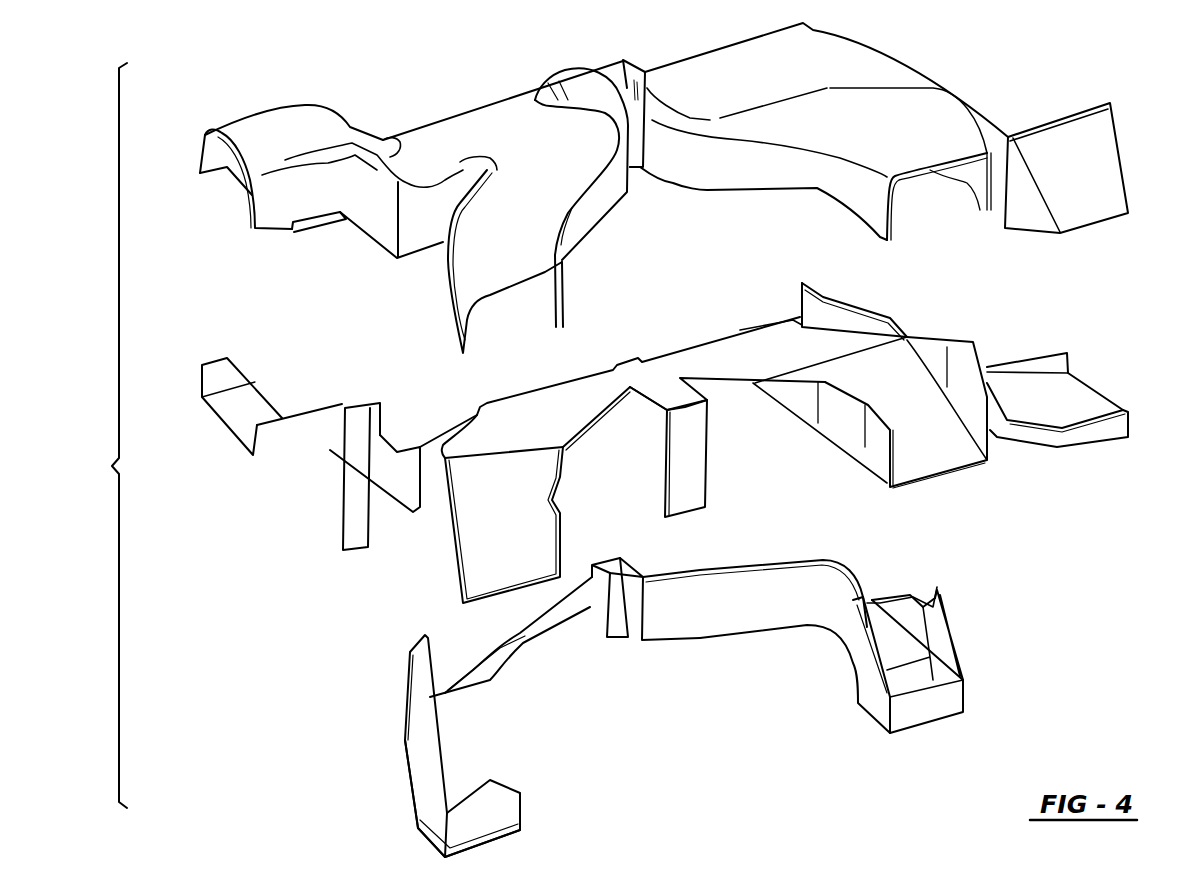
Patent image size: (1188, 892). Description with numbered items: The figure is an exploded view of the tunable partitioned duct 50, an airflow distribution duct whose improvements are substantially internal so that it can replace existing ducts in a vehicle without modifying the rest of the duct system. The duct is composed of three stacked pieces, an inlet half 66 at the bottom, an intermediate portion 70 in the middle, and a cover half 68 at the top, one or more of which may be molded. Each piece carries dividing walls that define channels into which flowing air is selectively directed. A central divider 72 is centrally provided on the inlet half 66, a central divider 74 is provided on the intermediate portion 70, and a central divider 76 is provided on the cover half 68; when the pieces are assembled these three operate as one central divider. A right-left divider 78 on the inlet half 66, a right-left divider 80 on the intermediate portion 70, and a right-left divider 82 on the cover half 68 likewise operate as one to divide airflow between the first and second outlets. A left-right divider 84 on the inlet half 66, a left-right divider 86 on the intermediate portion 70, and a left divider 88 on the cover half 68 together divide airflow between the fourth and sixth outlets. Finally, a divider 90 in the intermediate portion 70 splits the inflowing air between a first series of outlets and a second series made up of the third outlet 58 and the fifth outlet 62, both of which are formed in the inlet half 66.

The tunable partitioned duct 50 is at (106, 435).
The third outlet 58 is at (436, 857).
The fifth outlet 62 is at (927, 720).
The inlet half 66 is at (415, 808).
The cover half 68 is at (853, 60).
The intermediate portion 70 is at (327, 458).
The central divider 72 is at (635, 645).
The central divider 74 is at (690, 480).
The central divider 76 is at (587, 70).
The right-left divider 78 is at (413, 645).
The right-left divider 80 is at (457, 423).
The right-left divider 82 is at (475, 168).
The left-right divider 84 is at (943, 595).
The left-right divider 86 is at (845, 305).
The left divider 88 is at (943, 100).
The divider 90 is at (753, 343).